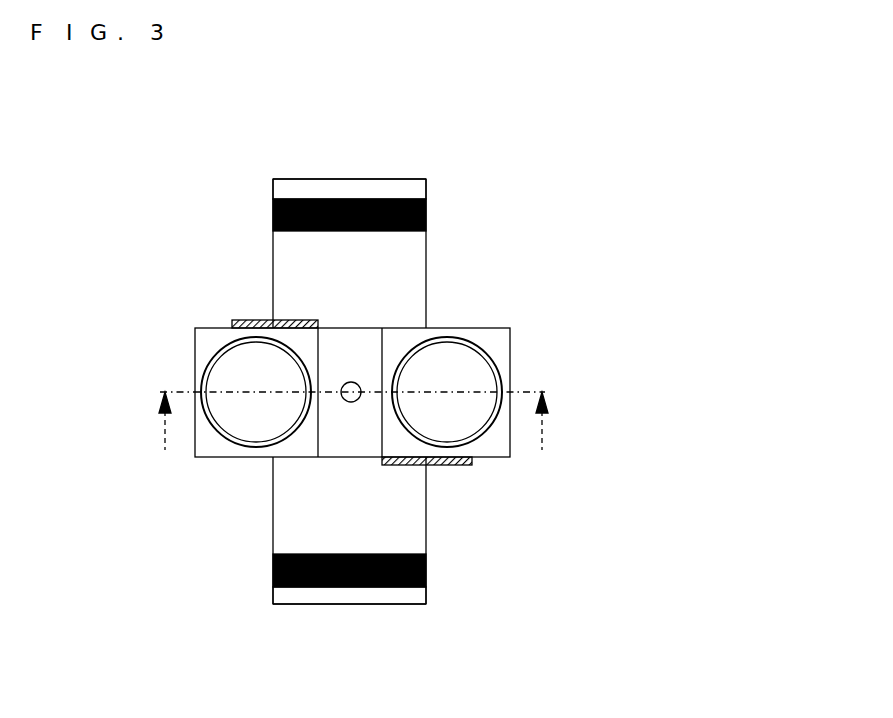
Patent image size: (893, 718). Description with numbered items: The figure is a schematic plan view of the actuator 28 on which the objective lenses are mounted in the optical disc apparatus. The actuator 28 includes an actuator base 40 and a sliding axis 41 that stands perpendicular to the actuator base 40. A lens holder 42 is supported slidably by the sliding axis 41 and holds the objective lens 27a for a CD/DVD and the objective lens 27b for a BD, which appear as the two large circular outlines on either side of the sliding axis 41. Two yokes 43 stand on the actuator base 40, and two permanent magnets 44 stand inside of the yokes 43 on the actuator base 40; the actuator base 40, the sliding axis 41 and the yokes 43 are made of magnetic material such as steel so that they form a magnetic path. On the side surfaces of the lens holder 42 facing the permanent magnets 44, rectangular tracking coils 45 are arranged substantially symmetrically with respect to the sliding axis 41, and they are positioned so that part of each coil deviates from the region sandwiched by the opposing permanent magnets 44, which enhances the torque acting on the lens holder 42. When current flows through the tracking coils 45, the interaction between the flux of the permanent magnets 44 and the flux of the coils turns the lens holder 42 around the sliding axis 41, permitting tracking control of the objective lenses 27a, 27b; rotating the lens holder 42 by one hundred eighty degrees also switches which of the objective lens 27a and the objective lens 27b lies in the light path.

The actuator 28 is at (670, 165).
The actuator base 40 is at (426, 537).
The sliding axis 41 is at (351, 382).
The lens holder 42 is at (512, 328).
The yokes 43 is at (426, 186).
The permanent magnets 44 is at (426, 219).
The tracking coils 45 is at (258, 322).
The objective lens for a CD/DVD 27a is at (250, 442).
The objective lens for a BD 27b is at (483, 410).